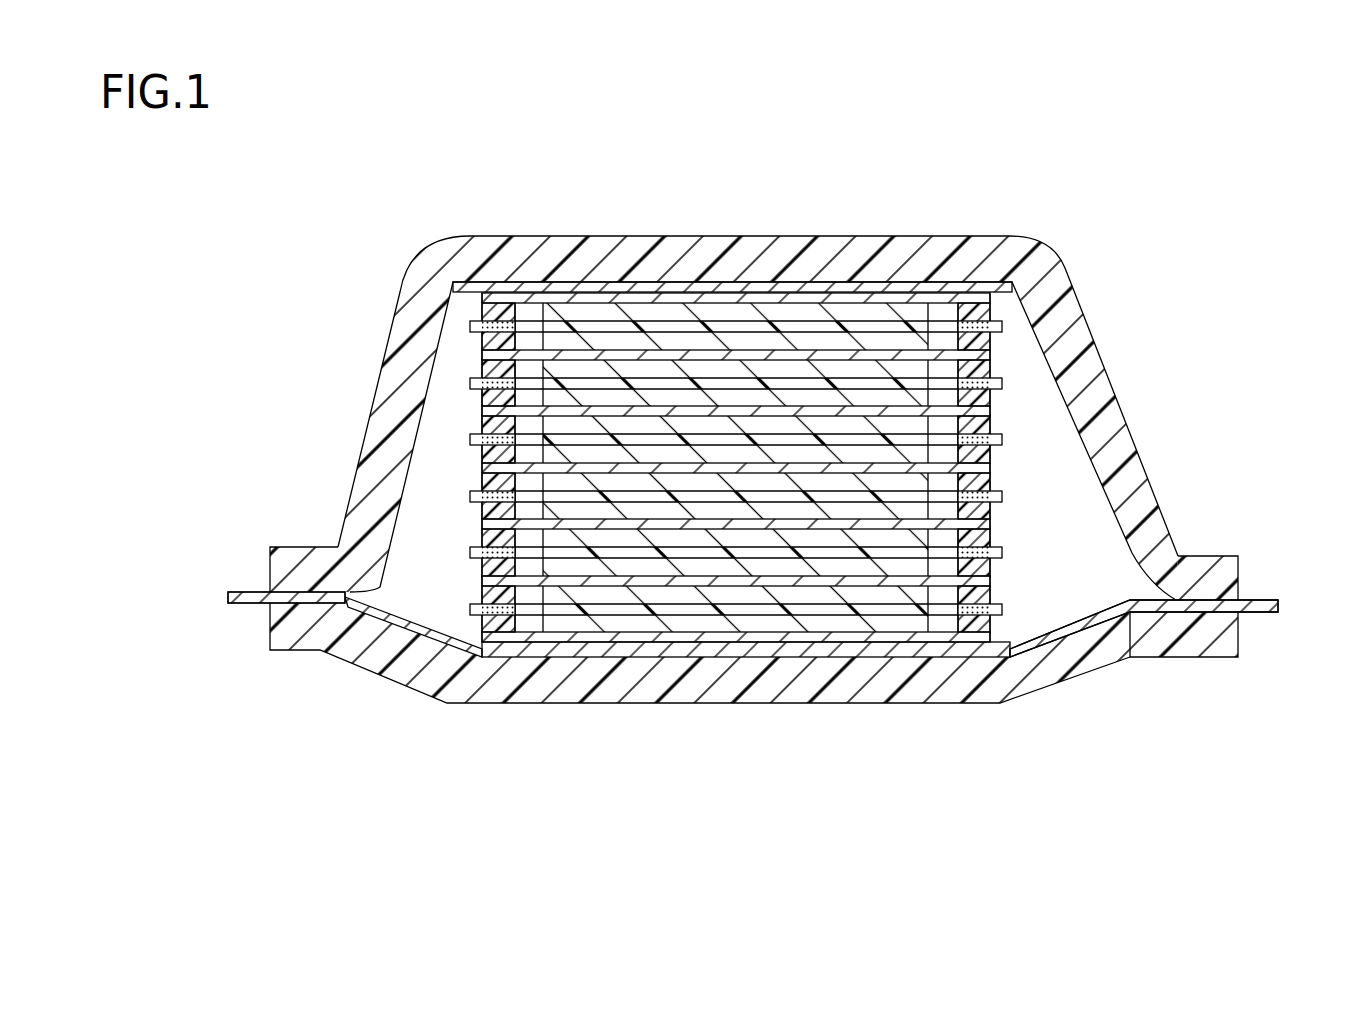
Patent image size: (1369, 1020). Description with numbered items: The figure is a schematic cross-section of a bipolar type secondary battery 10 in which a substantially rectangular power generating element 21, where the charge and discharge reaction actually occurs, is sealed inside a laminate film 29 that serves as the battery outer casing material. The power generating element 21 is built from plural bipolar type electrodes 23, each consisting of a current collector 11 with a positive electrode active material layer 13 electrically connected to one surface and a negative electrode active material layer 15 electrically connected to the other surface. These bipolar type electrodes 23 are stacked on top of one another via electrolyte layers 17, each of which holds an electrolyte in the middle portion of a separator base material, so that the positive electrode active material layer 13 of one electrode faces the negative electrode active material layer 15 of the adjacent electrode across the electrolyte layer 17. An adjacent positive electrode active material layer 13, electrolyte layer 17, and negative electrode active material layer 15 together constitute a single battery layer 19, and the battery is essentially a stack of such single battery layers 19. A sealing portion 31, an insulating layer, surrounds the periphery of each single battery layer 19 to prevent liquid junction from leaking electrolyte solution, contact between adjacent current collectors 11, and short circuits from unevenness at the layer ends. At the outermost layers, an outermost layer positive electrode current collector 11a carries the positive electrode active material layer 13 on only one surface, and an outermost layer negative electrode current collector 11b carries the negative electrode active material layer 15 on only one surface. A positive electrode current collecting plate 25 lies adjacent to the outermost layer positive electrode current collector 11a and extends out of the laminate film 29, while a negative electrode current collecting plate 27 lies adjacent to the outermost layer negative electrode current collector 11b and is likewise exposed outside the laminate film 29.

The bipolar type secondary battery 10 is at (254, 188).
The current collector 11 is at (783, 352).
The outermost layer positive electrode current collector 11a is at (851, 297).
The outermost layer negative electrode current collector 11b is at (877, 638).
The positive electrode active material layer 13 is at (718, 366).
The negative electrode active material layer 15 is at (610, 393).
The electrolyte layer 17 is at (664, 383).
The single battery layer 19 is at (595, 174).
The power generating element 21 is at (1015, 520).
The bipolar type electrode 23 is at (633, 766).
The positive electrode current collecting plate 25 is at (255, 592).
The negative electrode current collecting plate 27 is at (1263, 600).
The laminate film 29 is at (1226, 556).
The sealing portion 31 is at (989, 322).